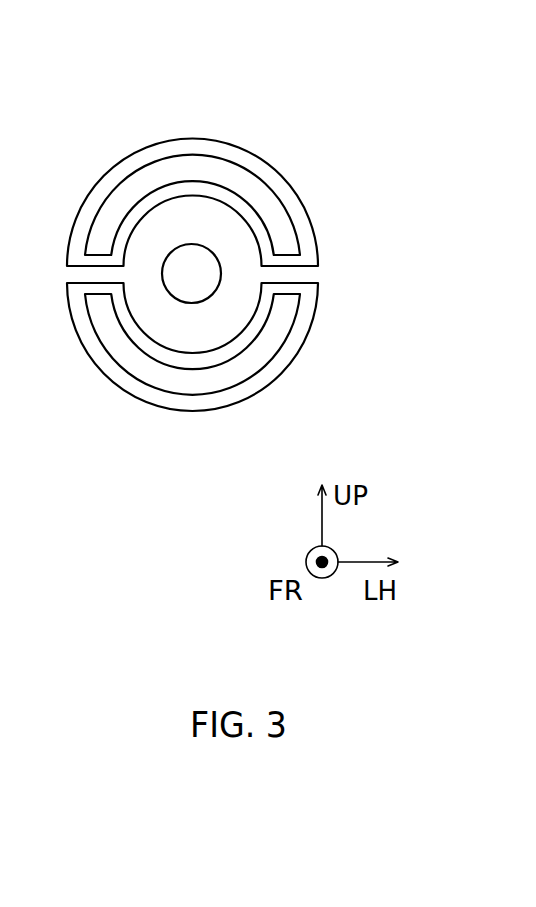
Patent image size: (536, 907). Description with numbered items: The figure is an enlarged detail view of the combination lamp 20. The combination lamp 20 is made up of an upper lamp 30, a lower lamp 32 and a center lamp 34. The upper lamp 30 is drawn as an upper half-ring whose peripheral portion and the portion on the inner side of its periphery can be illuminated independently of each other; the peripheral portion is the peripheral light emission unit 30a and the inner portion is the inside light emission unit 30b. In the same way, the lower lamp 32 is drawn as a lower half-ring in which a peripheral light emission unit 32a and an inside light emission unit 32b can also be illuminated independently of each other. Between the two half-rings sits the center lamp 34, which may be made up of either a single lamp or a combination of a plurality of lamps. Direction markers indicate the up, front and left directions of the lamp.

The combination lamp 20 is at (314, 90).
The upper lamp 30 is at (307, 193).
The peripheral light emission unit 30a is at (124, 156).
The inside light emission unit 30b is at (173, 168).
The lower lamp 32 is at (278, 392).
The peripheral light emission unit 32a is at (135, 392).
The inside light emission unit 32b is at (183, 382).
The center lamp 34 is at (220, 258).